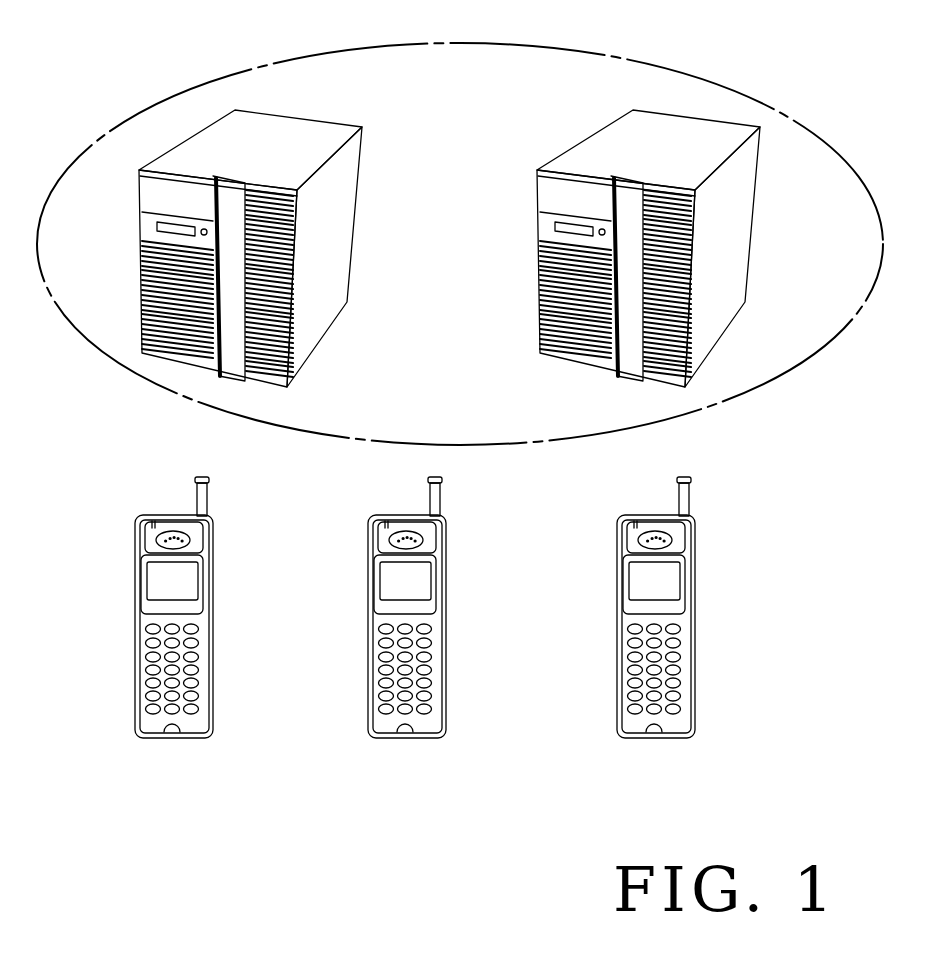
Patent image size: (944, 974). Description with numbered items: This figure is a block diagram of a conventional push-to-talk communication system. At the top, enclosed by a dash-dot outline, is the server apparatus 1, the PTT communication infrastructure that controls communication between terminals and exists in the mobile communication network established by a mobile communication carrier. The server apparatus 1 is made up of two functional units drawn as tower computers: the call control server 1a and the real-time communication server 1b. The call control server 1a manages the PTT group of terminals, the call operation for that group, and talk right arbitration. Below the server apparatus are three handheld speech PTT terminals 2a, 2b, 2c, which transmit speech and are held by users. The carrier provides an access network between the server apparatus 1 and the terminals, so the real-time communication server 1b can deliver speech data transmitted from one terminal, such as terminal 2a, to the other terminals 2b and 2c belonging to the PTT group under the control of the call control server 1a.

The server apparatus 1 is at (755, 98).
The call control server 1a is at (355, 220).
The real-time communication server 1b is at (570, 364).
The speech PTT terminal 2a is at (213, 540).
The speech PTT terminal 2b is at (446, 540).
The speech PTT terminal 2c is at (695, 540).